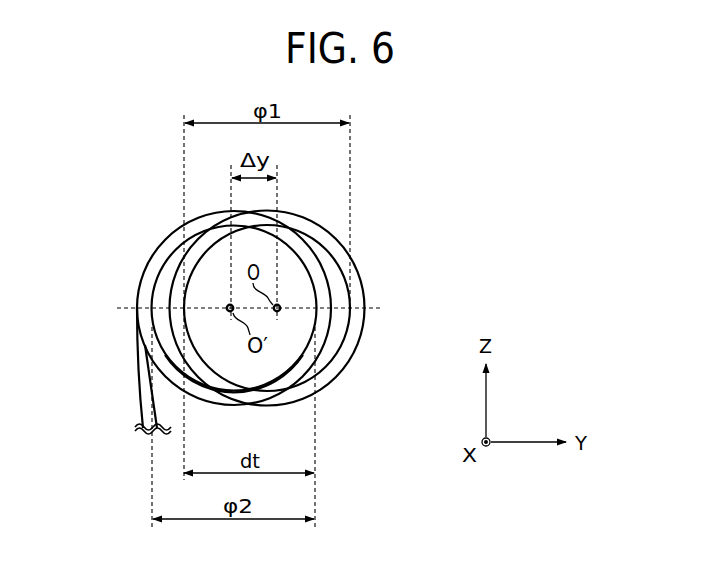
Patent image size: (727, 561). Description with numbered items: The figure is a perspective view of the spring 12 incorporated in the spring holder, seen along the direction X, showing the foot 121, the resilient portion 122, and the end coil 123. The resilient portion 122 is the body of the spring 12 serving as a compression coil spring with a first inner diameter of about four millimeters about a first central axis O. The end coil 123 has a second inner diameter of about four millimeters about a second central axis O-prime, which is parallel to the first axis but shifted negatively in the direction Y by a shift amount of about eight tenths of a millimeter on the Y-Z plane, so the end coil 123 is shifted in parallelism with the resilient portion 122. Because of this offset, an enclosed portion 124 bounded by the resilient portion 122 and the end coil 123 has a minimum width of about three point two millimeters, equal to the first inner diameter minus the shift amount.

The spring 12 is at (166, 194).
The foot 121 is at (142, 403).
The resilient portion 122 is at (365, 291).
The end coil 123 is at (152, 256).
The enclosed portion 124 is at (270, 363).